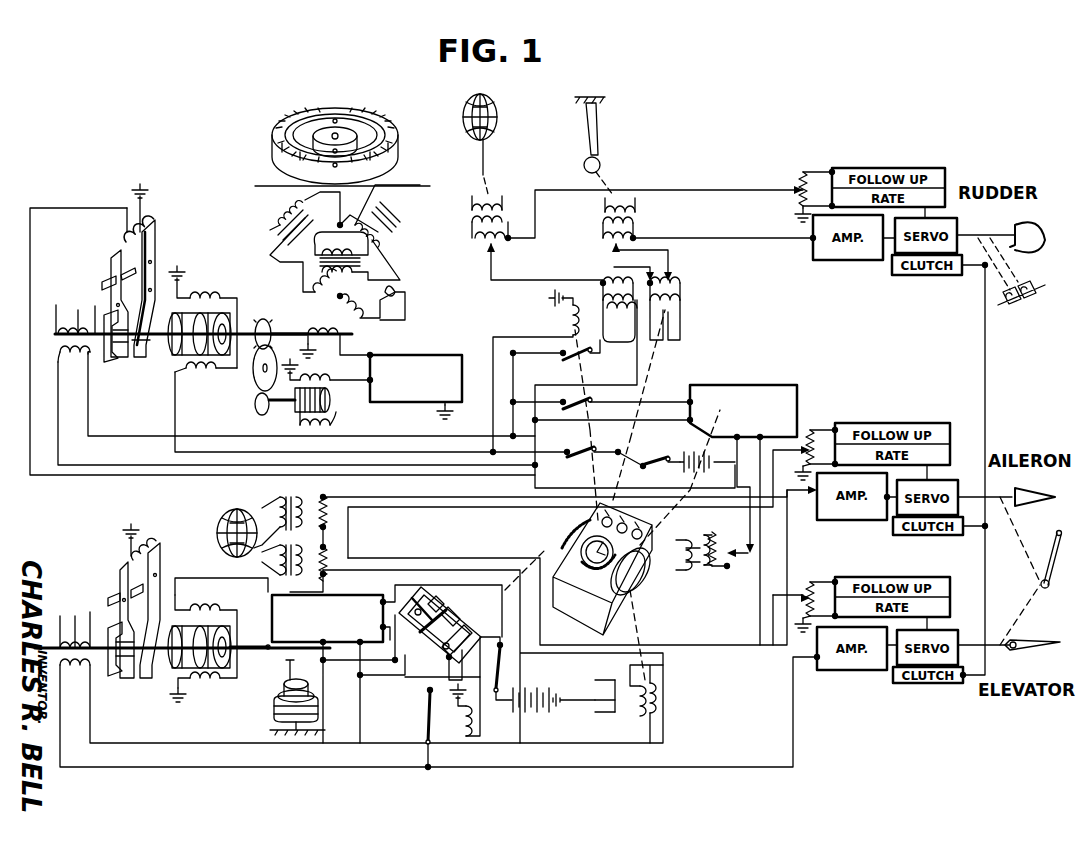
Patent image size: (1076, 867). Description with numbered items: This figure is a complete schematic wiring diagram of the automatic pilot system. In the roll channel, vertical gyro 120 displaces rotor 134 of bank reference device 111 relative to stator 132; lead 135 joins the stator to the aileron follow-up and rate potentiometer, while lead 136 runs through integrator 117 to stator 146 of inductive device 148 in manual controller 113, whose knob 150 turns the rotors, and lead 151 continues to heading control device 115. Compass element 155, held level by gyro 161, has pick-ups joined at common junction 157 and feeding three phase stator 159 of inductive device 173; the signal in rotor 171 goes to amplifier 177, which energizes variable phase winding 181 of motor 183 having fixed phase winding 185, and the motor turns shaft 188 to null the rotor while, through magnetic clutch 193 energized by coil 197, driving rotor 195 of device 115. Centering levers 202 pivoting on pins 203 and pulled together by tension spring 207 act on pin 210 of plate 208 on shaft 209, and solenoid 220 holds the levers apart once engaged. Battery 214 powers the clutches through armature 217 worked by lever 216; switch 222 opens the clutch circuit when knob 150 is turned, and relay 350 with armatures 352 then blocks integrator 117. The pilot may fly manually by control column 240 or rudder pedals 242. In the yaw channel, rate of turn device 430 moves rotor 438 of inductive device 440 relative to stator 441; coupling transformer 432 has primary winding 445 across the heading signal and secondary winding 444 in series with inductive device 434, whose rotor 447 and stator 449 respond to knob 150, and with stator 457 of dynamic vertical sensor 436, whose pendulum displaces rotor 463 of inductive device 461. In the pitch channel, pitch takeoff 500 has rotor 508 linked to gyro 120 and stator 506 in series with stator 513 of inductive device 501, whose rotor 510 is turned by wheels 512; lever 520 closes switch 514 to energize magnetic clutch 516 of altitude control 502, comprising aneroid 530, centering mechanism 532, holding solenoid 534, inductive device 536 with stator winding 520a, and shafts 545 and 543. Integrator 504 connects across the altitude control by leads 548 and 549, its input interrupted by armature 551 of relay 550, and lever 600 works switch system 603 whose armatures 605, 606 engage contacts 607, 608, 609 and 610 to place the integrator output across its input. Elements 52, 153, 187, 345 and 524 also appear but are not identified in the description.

The winding 52 is at (72, 356).
The bank reference device 111 is at (301, 496).
The manual control device 113 is at (536, 549).
The heading control device 115 is at (53, 358).
The integrating device 117 is at (732, 428).
The vertical gyro 120 is at (222, 527).
The stator 132 is at (318, 508).
The rotor 134 is at (282, 506).
The lead 135 is at (475, 508).
The lead 136 is at (442, 497).
The stator 146 is at (729, 568).
The inductive device 148 is at (682, 568).
The knob 150 is at (592, 572).
The lead 151 is at (780, 522).
The gear 153 is at (262, 316).
The compass element 155 is at (376, 271).
The common junction 157 is at (345, 225).
The three phase stator 159 is at (342, 296).
The gyro 161 is at (277, 135).
The rotor 171 is at (330, 346).
The inductive device 173 is at (333, 316).
The amplifier 177 is at (405, 402).
The variable phase winding 181 is at (320, 380).
The two-phase motor 183 is at (328, 402).
The fixed phase winding 185 is at (298, 430).
The gear 187 is at (255, 376).
The shaft 188 is at (282, 330).
The magnetic clutch 193 is at (171, 362).
The rotor 195 is at (60, 334).
The coil 197 is at (208, 292).
The centering levers 202 is at (125, 296).
The pins 203 is at (112, 270).
The tension spring 207 is at (150, 256).
The plate 208 is at (118, 360).
The shaft 209 is at (94, 312).
The pin 210 is at (150, 327).
The battery 214 is at (700, 478).
The lever 216 is at (635, 528).
The armature 217 is at (658, 462).
The solenoid 220 is at (128, 236).
The switch 222 is at (587, 446).
The manual control column 240 is at (1057, 533).
The rudder pedals 242 is at (1030, 300).
The lead 345 is at (66, 650).
The relay 350 is at (566, 321).
The armatures 352 is at (590, 398).
The rate of turn device 430 is at (497, 130).
The coupling transformer 432 is at (566, 304).
The inductive device 434 is at (690, 297).
The dynamic vertical sensor 436 is at (600, 160).
The rotor 438 is at (480, 205).
The inductive device 440 is at (431, 231).
The stator 441 is at (475, 240).
The secondary winding 444 is at (618, 282).
The primary winding 445 is at (623, 316).
The rotor 447 is at (688, 312).
The stator 449 is at (685, 285).
The stator 457 is at (630, 235).
The inductive device 461 is at (556, 227).
The rotor 463 is at (630, 213).
The pitch takeoff 500 is at (281, 539).
The inductive device 501 is at (598, 674).
The altitude control 502 is at (232, 704).
The integrating device 504 is at (292, 641).
The stator 506 is at (320, 552).
The rotor 508 is at (280, 570).
The rotor 510 is at (635, 705).
The wheels 512 is at (637, 578).
The stator 513 is at (662, 698).
The switch 514 is at (505, 662).
The magnetic clutch 516 is at (220, 630).
The lever 520 is at (672, 536).
The stator winding 520a is at (78, 676).
The battery 524 is at (533, 712).
The aneroid 530 is at (272, 716).
The centering mechanism 532 is at (150, 590).
The holding solenoid 534 is at (137, 548).
The inductive signal developing device 536 is at (34, 670).
The shaft 543 is at (98, 648).
The shaft 545 is at (248, 654).
The lead 548 is at (345, 665).
The lead 549 is at (440, 760).
The relay 550 is at (466, 712).
The armature 551 is at (430, 712).
The lever 600 is at (603, 522).
The switch system 603 is at (449, 612).
The armature 605 is at (456, 622).
The armature 606 is at (444, 648).
The contact 607 is at (436, 600).
The contact 608 is at (447, 660).
The contact 609 is at (418, 610).
The contact 610 is at (460, 634).